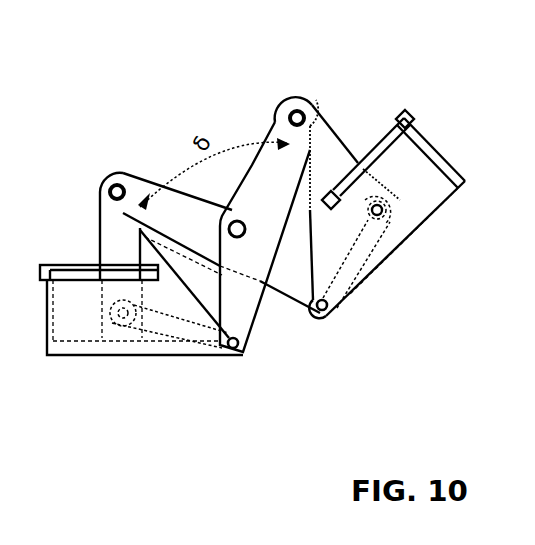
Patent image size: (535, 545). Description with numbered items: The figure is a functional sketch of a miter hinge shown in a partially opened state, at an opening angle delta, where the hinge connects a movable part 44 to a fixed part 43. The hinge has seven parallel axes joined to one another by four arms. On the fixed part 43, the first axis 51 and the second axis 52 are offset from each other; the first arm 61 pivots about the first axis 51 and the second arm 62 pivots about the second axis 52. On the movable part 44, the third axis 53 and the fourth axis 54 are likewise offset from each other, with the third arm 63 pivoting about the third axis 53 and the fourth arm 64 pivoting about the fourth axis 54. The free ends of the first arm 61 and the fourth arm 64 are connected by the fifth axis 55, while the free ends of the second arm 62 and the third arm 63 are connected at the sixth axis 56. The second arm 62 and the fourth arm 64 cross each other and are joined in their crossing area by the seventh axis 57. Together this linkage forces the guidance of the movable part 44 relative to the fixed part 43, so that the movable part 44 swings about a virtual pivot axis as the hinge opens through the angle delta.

The fixed part 43 is at (63, 337).
The movable part 44 is at (434, 190).
The first axis 51 is at (122, 318).
The second axis 52 is at (232, 349).
The third axis 53 is at (377, 214).
The fourth axis 54 is at (328, 313).
The fifth axis 55 is at (110, 186).
The sixth axis 56 is at (296, 109).
The seventh axis 57 is at (239, 236).
The first arm 61 is at (117, 243).
The second arm 62 is at (268, 163).
The third arm 63 is at (335, 143).
The fourth arm 64 is at (150, 187).